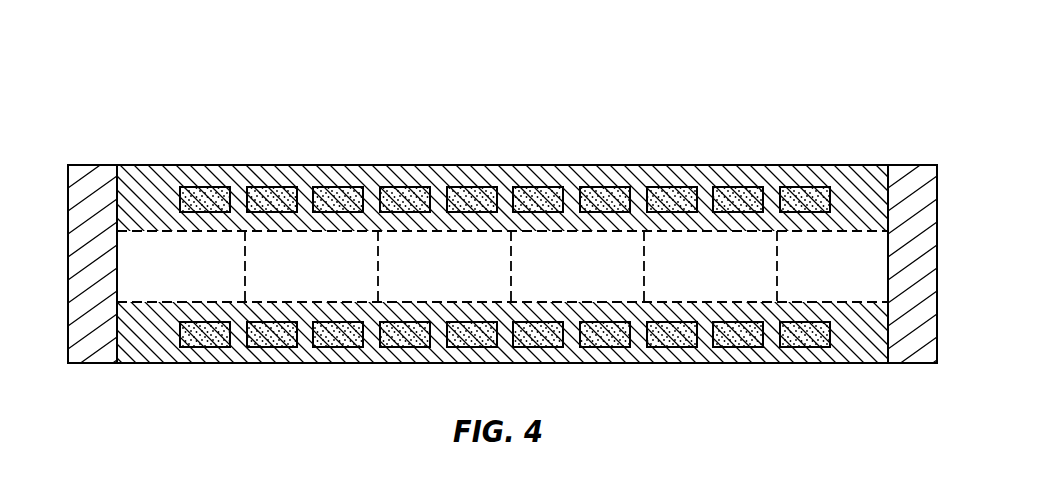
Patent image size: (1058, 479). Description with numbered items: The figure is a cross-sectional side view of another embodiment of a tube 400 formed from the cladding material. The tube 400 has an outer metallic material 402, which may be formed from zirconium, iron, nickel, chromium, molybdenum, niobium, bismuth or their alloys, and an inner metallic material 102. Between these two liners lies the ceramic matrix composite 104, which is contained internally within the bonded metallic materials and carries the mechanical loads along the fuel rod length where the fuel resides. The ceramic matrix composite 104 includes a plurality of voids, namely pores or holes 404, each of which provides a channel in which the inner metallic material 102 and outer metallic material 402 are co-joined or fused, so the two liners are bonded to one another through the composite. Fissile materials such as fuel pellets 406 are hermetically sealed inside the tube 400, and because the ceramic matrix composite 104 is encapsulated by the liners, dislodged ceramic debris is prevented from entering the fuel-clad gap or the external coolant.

The tube 400 is at (157, 142).
The outer metallic material 402 is at (347, 167).
The pores or holes 404 is at (503, 192).
The ceramic matrix composite 104 is at (675, 195).
The inner metallic material 102 is at (798, 220).
The fuel pellets 406 is at (283, 282).